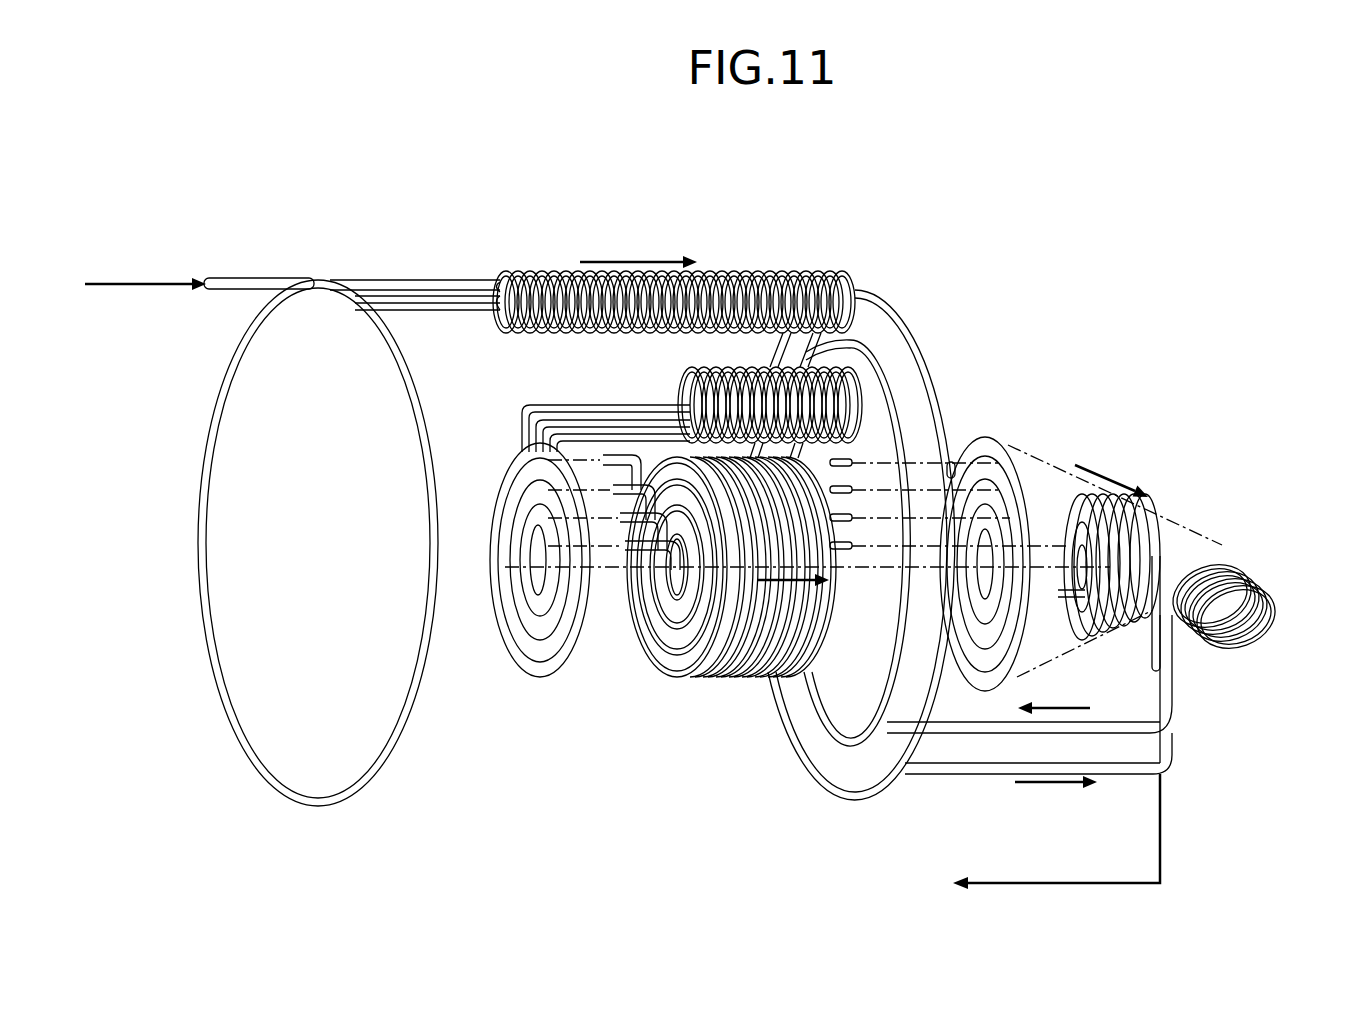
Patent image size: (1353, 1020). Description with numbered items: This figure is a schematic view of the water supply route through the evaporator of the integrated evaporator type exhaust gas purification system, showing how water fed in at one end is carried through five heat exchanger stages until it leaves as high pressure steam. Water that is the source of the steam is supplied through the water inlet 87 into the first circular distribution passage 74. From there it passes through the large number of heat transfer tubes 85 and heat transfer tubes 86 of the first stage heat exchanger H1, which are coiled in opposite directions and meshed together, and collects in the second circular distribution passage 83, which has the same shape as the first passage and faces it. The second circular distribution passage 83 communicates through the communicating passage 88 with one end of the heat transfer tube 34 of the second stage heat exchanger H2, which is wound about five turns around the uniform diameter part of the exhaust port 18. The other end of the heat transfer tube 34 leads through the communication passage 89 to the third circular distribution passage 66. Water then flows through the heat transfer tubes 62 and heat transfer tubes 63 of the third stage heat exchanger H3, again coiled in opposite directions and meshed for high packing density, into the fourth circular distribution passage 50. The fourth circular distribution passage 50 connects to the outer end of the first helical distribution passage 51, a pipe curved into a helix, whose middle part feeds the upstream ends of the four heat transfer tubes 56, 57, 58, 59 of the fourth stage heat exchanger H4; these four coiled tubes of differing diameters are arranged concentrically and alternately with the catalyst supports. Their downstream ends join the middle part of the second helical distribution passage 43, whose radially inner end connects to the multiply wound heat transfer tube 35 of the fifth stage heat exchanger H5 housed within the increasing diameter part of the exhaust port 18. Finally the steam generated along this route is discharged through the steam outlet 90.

The exhaust port 18 is at (1070, 470).
The heat transfer tube 34 is at (1258, 652).
The heat transfer tube 35 is at (1128, 622).
The second helical distribution passage 43 is at (1003, 446).
The fourth circular distribution passage 50 is at (513, 470).
The first helical distribution passage 51 is at (533, 656).
The heat transfer tube 56 is at (693, 672).
The heat transfer tube 57 is at (679, 642).
The heat transfer tube 58 is at (672, 606).
The heat transfer tube 59 is at (676, 583).
The heat transfer tubes 62 is at (700, 384).
The heat transfer tubes 63 is at (790, 350).
The third circular distribution passage 66 is at (855, 735).
The first circular distribution passage 74 is at (206, 438).
The second circular distribution passage 83 is at (915, 322).
The heat transfer tubes 85 is at (512, 275).
The heat transfer tubes 86 is at (532, 334).
The water inlet 87 is at (232, 278).
The communicating passage 88 is at (975, 774).
The communication passage 89 is at (1012, 722).
The steam outlet 90 is at (1160, 842).
The first stage heat exchanger H1 is at (748, 266).
The second stage heat exchanger H2 is at (1261, 546).
The third stage heat exchanger H3 is at (660, 394).
The fourth stage heat exchanger H4 is at (729, 684).
The fifth stage heat exchanger H5 is at (1174, 541).